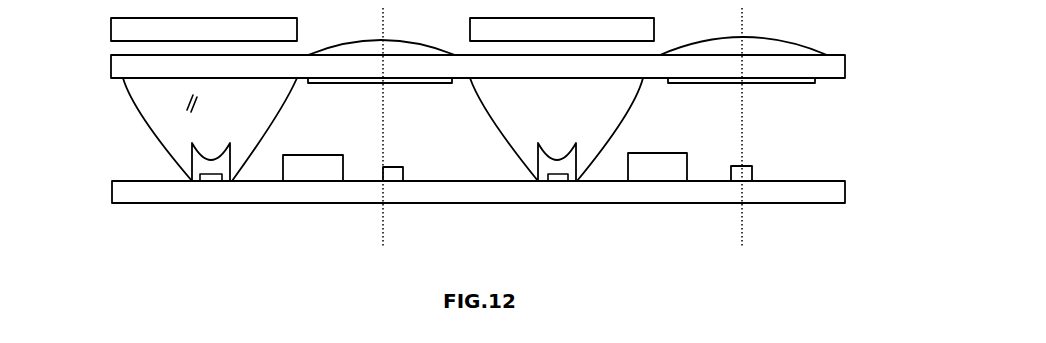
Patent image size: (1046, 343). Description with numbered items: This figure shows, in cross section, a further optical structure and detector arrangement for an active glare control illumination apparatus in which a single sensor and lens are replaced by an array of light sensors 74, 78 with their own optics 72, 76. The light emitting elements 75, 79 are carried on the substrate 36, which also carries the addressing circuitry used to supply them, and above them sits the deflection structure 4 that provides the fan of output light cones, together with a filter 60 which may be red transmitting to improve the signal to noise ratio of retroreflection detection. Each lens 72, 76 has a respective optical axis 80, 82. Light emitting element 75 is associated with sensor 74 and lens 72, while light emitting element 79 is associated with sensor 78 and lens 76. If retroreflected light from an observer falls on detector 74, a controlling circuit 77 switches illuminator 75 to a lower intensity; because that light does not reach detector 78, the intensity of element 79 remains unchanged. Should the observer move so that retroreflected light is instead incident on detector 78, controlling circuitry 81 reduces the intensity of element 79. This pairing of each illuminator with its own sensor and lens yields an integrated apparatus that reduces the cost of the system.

The deflection structure 4 is at (111, 29).
The substrate 36 is at (112, 191).
The filter 60 is at (828, 102).
The lens 72 is at (793, 45).
The light sensor 74 is at (752, 173).
The light emitting element 75 is at (542, 203).
The lens 76 is at (422, 47).
The controlling circuit 77 is at (648, 203).
The light sensor 78 is at (403, 173).
The light emitting element 79 is at (185, 203).
The optical axis 80 is at (742, 216).
The controlling circuitry 81 is at (300, 203).
The optical axis 82 is at (383, 216).